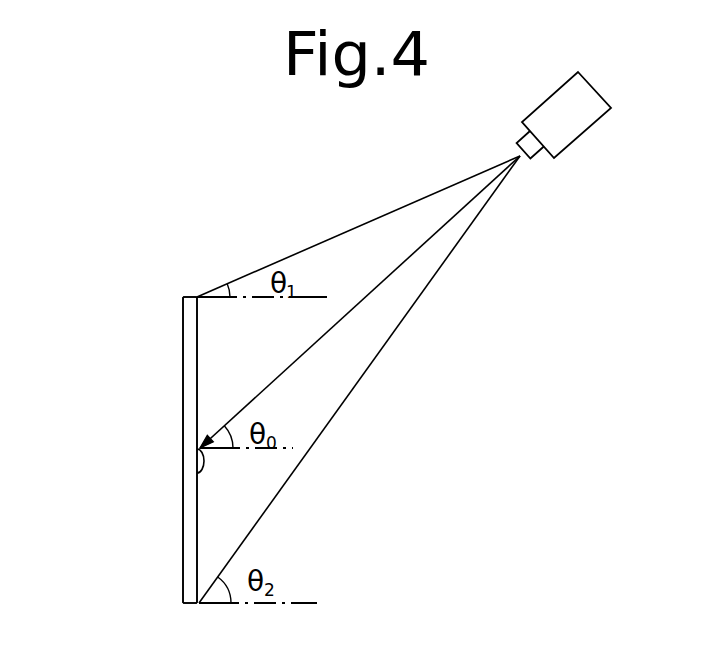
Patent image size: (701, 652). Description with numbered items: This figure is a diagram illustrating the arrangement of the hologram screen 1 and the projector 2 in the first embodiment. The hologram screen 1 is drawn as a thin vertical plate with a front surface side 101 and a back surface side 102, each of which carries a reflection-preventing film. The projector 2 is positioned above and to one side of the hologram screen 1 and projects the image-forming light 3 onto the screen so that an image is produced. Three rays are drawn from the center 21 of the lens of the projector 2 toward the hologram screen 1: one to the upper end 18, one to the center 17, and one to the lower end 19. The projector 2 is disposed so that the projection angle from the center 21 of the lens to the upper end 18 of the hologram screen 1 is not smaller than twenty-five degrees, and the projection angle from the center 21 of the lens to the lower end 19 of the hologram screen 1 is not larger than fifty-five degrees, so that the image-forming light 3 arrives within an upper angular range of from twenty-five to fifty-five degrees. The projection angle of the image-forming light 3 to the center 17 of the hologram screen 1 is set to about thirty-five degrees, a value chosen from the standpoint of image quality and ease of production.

The hologram screen 1 is at (187, 382).
The projector 2 is at (575, 125).
The image-forming light 3 is at (378, 284).
The center of the hologram screen 17 is at (197, 473).
The upper end of the hologram screen 18 is at (195, 294).
The lower end of the hologram screen 19 is at (192, 608).
The center of the lens of the projector 21 is at (522, 158).
The front surface side 101 is at (199, 513).
The back surface side 102 is at (183, 542).